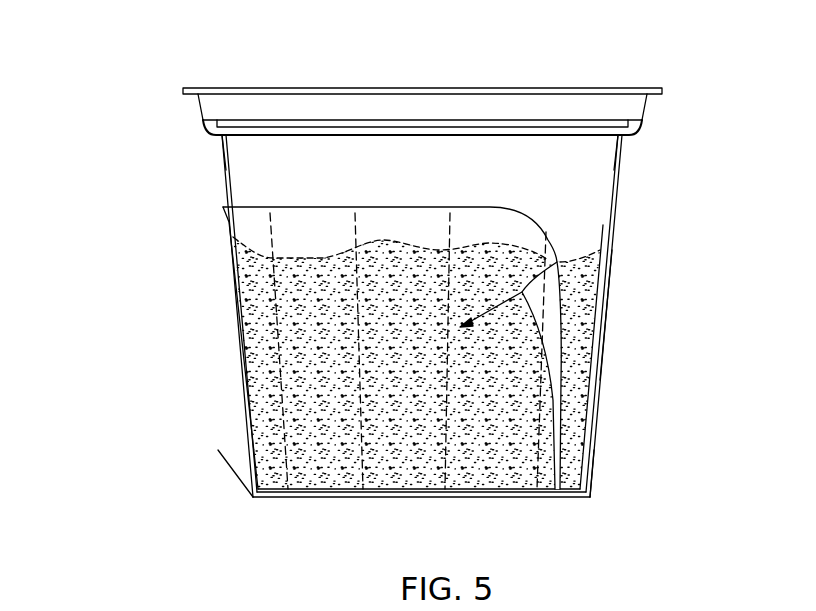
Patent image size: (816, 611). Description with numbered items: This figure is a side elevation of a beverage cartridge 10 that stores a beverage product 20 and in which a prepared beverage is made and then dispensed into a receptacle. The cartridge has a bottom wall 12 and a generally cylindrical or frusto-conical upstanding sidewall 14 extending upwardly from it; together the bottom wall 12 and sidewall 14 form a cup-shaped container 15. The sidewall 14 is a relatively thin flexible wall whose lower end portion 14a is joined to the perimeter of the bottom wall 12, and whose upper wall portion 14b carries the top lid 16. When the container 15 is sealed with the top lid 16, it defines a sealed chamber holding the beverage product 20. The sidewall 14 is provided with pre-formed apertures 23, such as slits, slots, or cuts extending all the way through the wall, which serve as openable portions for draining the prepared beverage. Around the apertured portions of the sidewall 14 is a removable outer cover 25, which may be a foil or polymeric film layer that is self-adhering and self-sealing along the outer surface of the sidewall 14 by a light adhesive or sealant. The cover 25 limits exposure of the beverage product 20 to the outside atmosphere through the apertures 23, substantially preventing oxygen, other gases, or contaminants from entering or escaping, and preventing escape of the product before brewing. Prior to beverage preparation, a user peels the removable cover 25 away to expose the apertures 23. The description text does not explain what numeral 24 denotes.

The beverage cartridge 10 is at (128, 50).
The bottom wall 12 is at (352, 497).
The sidewall 14 is at (616, 228).
The lower end portion 14a is at (632, 487).
The upper wall portion 14b is at (675, 117).
The cup-shaped container 15 is at (647, 348).
The top lid 16 is at (510, 87).
The beverage product 20 is at (388, 238).
The apertures 23 is at (600, 287).
The filter 24 is at (265, 120).
The removable outer cover 25 is at (290, 207).